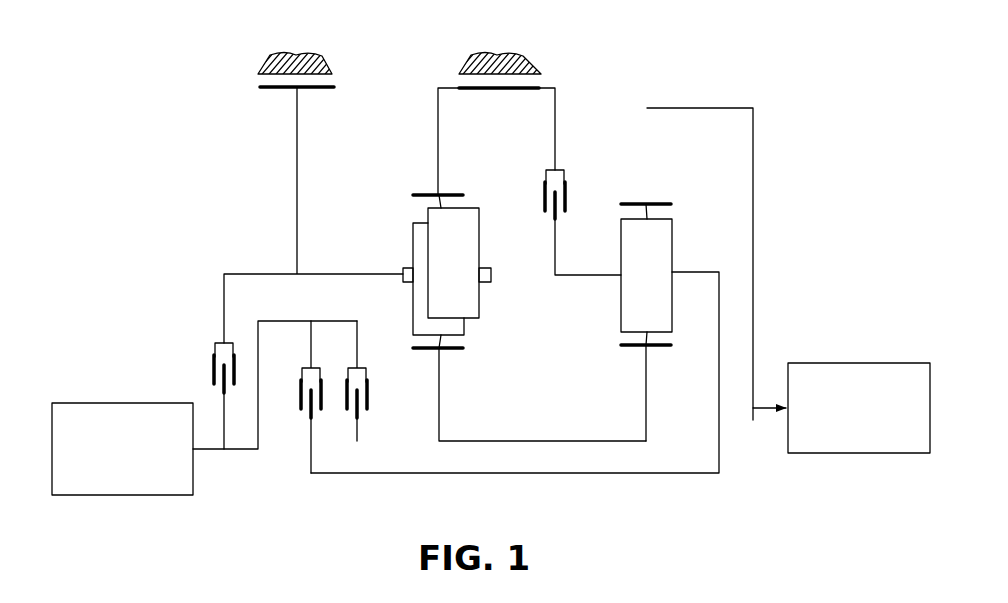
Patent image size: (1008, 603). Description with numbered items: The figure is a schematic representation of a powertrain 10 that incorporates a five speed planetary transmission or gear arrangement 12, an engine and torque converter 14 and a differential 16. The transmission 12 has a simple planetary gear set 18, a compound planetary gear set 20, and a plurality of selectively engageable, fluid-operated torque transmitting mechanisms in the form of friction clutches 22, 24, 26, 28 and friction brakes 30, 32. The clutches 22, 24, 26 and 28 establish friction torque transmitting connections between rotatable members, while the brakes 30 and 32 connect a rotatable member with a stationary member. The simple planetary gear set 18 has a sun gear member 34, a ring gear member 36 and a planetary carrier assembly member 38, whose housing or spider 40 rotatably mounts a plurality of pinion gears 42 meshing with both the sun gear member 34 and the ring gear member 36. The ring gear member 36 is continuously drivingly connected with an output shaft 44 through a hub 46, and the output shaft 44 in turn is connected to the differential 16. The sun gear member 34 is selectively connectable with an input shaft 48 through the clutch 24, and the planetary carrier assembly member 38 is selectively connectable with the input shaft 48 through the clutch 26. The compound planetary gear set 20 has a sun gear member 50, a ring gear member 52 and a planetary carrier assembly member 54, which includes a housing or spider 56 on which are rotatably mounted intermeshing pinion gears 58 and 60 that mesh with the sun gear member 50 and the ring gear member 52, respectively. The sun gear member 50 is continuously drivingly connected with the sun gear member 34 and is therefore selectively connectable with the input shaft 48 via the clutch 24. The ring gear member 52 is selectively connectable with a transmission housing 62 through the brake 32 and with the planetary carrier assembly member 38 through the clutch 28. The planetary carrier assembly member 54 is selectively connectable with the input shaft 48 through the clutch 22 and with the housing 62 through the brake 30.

The powertrain 10 is at (237, 189).
The planetary transmission 12 is at (621, 139).
The engine and torque converter 14 is at (88, 498).
The differential 16 is at (905, 361).
The simple planetary gear set 18 is at (685, 282).
The compound planetary gear set 20 is at (488, 271).
The friction clutch 22 is at (213, 370).
The friction clutch 24 is at (367, 390).
The friction clutch 26 is at (300, 390).
The friction clutch 28 is at (566, 190).
The friction brake 30 is at (261, 62).
The friction brake 32 is at (546, 62).
The sun gear member 34 is at (652, 352).
The ring gear member 36 is at (653, 200).
The planetary carrier assembly member 38 is at (696, 282).
The housing or spider 40 is at (705, 272).
The pinion gears 42 is at (632, 270).
The output shaft 44 is at (758, 413).
The hub 46 is at (728, 108).
The input shaft 48 is at (207, 456).
The sun gear member 50 is at (440, 385).
The ring gear member 52 is at (448, 195).
The planetary carrier assembly member 54 is at (488, 271).
The housing or spider 56 is at (404, 268).
The pinion gear 58 is at (464, 332).
The pinion gear 60 is at (477, 218).
The transmission housing 62 is at (290, 52).